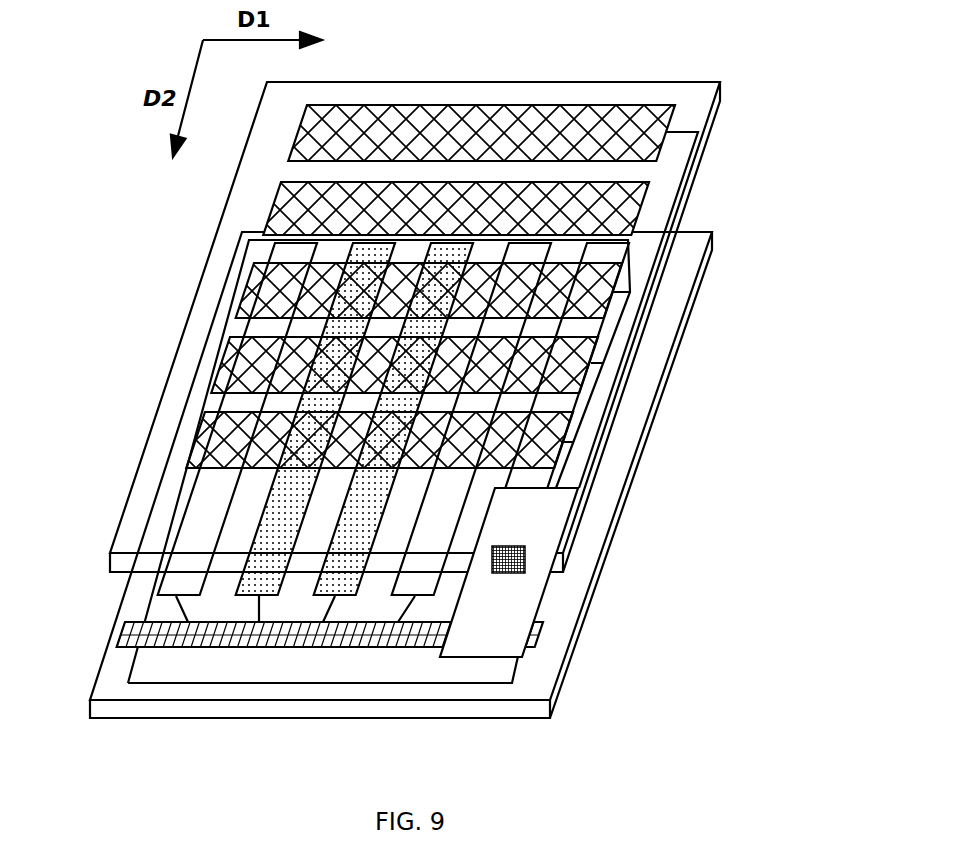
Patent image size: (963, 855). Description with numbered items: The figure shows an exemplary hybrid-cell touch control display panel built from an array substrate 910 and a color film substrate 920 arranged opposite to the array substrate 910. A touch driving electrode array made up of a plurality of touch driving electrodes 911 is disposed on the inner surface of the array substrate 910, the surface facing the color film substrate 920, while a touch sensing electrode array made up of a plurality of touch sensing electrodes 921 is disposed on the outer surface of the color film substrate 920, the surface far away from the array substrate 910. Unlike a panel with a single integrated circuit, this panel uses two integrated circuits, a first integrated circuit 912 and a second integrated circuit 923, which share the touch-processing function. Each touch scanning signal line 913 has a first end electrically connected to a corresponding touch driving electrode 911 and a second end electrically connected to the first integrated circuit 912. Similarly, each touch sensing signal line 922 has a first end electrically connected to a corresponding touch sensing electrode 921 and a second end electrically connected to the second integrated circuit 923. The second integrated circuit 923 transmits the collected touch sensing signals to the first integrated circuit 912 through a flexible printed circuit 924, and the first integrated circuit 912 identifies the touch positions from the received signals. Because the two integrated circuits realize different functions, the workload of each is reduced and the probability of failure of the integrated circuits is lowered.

The array substrate 910 is at (693, 290).
The color film substrate 920 is at (690, 112).
The touch sensing signal line 922 is at (677, 207).
The touch sensing electrodes 921 is at (455, 122).
The touch driving electrodes 911 is at (180, 582).
The touch scanning signal line 913 is at (172, 607).
The first integrated circuit 912 is at (125, 632).
The flexible printed circuit 924 is at (508, 604).
The second integrated circuit 923 is at (525, 560).